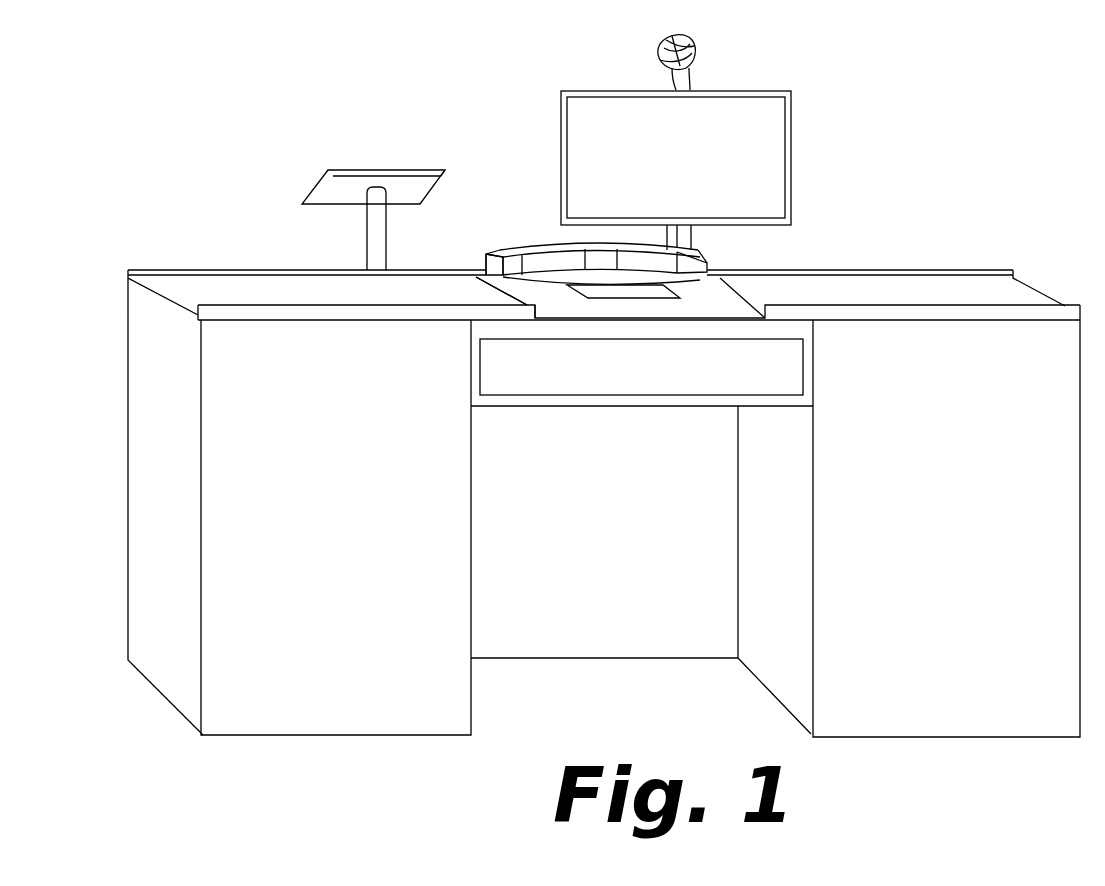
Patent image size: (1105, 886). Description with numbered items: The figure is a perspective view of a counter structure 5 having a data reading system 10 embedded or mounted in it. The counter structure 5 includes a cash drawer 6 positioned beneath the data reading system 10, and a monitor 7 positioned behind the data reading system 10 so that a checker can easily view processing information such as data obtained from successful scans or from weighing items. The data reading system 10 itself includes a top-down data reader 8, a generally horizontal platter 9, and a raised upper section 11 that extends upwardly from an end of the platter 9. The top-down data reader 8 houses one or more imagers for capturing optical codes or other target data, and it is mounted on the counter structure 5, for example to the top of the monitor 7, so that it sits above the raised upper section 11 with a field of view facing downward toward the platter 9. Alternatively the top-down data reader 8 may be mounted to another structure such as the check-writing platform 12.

The counter structure 5 is at (162, 336).
The cash drawer 6 is at (645, 370).
The monitor 7 is at (772, 90).
The top-down data reader 8 is at (668, 43).
The platter 9 is at (547, 297).
The data reading system 10 is at (543, 214).
The raised upper section 11 is at (508, 256).
The check-writing platform 12 is at (325, 190).